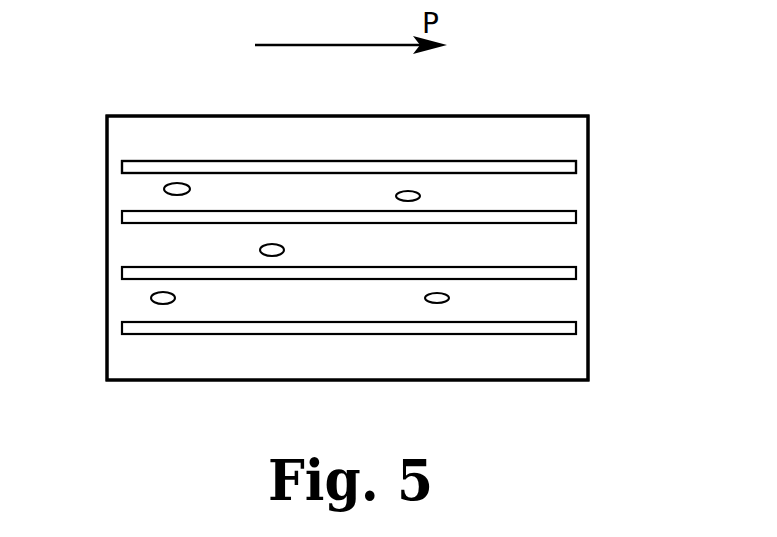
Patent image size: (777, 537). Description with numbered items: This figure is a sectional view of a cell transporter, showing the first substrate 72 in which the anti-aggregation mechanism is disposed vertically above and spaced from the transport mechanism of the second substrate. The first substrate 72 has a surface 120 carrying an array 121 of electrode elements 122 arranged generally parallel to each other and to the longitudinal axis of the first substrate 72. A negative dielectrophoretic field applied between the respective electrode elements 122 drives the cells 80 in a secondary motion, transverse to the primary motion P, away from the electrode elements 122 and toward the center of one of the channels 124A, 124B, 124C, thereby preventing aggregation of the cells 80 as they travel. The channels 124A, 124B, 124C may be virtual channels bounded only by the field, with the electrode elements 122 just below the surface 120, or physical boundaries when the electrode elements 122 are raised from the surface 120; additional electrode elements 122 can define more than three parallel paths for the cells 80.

The first substrate 72 is at (508, 110).
The surface 120 is at (261, 145).
The array 121 is at (534, 152).
The electrode elements 122 is at (568, 211).
The channel 124A is at (560, 206).
The channel 124B is at (560, 260).
The channel 124C is at (560, 315).
The cells 80 is at (164, 189).